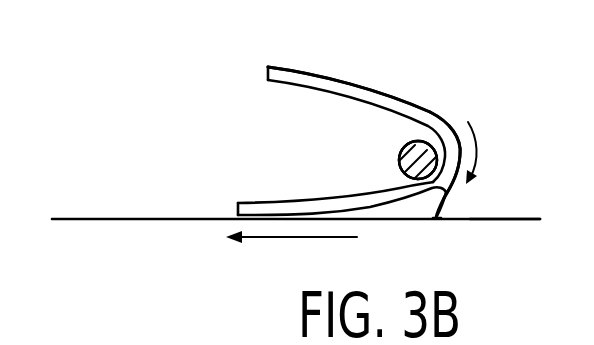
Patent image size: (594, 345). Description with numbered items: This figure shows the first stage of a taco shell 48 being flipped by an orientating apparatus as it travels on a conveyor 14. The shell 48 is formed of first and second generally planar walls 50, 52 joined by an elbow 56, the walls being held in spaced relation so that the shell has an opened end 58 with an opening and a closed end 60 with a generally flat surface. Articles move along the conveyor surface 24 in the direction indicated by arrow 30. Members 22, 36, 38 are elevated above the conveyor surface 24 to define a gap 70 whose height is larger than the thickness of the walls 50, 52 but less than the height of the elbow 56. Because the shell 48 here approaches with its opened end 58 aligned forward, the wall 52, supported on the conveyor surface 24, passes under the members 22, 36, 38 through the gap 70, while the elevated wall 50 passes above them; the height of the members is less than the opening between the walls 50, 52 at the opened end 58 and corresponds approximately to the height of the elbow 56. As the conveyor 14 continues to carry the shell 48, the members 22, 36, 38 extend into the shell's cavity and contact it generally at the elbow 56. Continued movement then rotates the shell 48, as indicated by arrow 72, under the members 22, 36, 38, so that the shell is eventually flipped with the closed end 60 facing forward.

The conveyor 14 is at (98, 214).
The orientating member 22 is at (388, 147).
The conveyor surface 24 is at (502, 218).
The arrow 30 is at (282, 241).
The member 36 is at (418, 160).
The member 38 is at (418, 160).
The taco shell 48 is at (390, 82).
The first wall 50 is at (312, 79).
The second wall 52 is at (290, 173).
The elbow 56 is at (434, 112).
The opened end 58 is at (268, 106).
The closed end 60 is at (516, 116).
The gap 70 is at (443, 200).
The arrow 72 is at (478, 158).